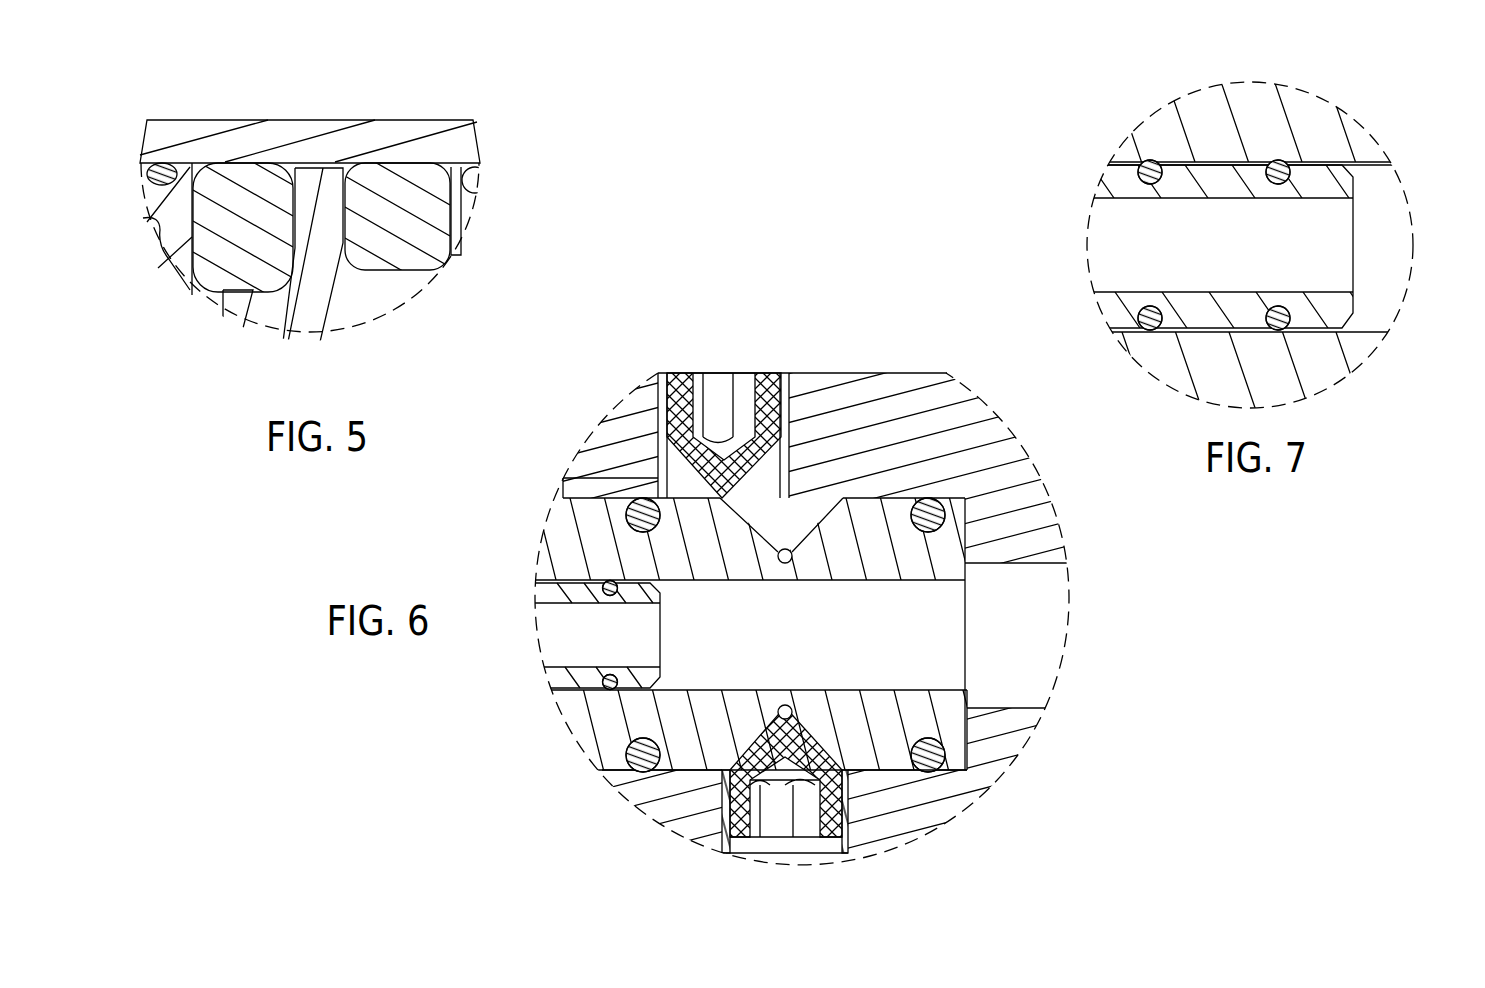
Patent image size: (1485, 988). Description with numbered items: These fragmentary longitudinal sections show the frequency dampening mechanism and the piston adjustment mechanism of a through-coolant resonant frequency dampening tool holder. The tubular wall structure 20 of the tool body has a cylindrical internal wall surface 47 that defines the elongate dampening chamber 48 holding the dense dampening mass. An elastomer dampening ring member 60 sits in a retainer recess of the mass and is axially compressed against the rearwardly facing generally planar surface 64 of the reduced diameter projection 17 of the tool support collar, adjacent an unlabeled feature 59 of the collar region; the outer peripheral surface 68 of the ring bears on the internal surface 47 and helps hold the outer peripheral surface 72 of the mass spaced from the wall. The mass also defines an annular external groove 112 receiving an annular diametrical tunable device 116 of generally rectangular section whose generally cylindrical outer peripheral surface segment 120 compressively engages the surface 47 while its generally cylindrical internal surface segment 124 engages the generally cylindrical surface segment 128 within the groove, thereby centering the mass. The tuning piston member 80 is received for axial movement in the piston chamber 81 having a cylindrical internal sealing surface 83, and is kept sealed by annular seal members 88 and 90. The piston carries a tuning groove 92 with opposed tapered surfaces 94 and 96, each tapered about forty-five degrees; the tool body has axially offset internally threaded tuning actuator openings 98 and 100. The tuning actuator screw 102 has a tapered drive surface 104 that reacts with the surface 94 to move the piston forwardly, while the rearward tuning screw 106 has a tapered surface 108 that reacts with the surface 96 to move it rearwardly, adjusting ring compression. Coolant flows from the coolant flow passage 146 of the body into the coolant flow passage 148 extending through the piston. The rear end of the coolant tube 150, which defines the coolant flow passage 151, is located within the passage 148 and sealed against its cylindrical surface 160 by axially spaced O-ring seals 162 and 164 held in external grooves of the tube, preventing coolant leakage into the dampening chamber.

In FIG. 5, the reduced diameter projection 17 is at (178, 263).
In FIG. 5, the tubular wall structure 20 is at (310, 130).
In FIG. 5, the cylindrical internal wall surface 47 is at (461, 187).
In FIG. 5, the elongate dampening chamber 48 is at (214, 300).
In FIG. 5, the notch 59 is at (152, 218).
In FIG. 5, the elastomer dampening ring member 60 is at (242, 188).
In FIG. 5, the rearwardly facing generally planar surface 64 is at (195, 290).
In FIG. 5, the outer peripheral surface 68 is at (282, 168).
In FIG. 5, the outer peripheral surface 72 is at (468, 158).
In FIG. 5, the annular external groove 112 is at (348, 188).
In FIG. 5, the annular diametrical tunable device 116 is at (430, 187).
In FIG. 5, the generally cylindrical outer peripheral surface segment 120 is at (408, 164).
In FIG. 5, the generally cylindrical internal surface segment 124 is at (397, 272).
In FIG. 5, the generally cylindrical surface segment 128 is at (413, 268).
In FIG. 6, the tuning piston member 80 is at (887, 557).
In FIG. 7, the tuning piston member 80 is at (1253, 102).
In FIG. 6, the piston chamber 81 is at (913, 720).
In FIG. 6, the cylindrical internal sealing surface 83 is at (873, 767).
In FIG. 6, the annular seal member 88 is at (626, 752).
In FIG. 6, the annular seal member 90 is at (945, 512).
In FIG. 6, the tuning groove 92 is at (783, 535).
In FIG. 6, the tapered surface 94 is at (820, 517).
In FIG. 6, the tapered surface 96 is at (797, 470).
In FIG. 6, the internally threaded tuning actuator opening 98 is at (683, 373).
In FIG. 6, the internally threaded tuning actuator opening 100 is at (740, 835).
In FIG. 6, the tuning actuator screw 102 is at (765, 375).
In FIG. 6, the tapered drive surface 104 is at (580, 478).
In FIG. 6, the rearward tuning screw 106 is at (835, 830).
In FIG. 6, the tapered surface 108 is at (762, 728).
In FIG. 6, the coolant flow passage 146 is at (1050, 613).
In FIG. 6, the coolant flow passage 148 is at (945, 637).
In FIG. 7, the coolant flow passage 148 is at (1385, 237).
In FIG. 6, the coolant tube 150 is at (553, 596).
In FIG. 7, the coolant tube 150 is at (1120, 180).
In FIG. 6, the coolant flow passage 151 is at (565, 642).
In FIG. 7, the coolant flow passage 151 is at (1108, 245).
In FIG. 7, the cylindrical surface 160 is at (1365, 328).
In FIG. 7, the O-ring seal 162 is at (1145, 162).
In FIG. 6, the O-ring seal 164 is at (610, 684).
In FIG. 7, the O-ring seal 164 is at (1277, 162).